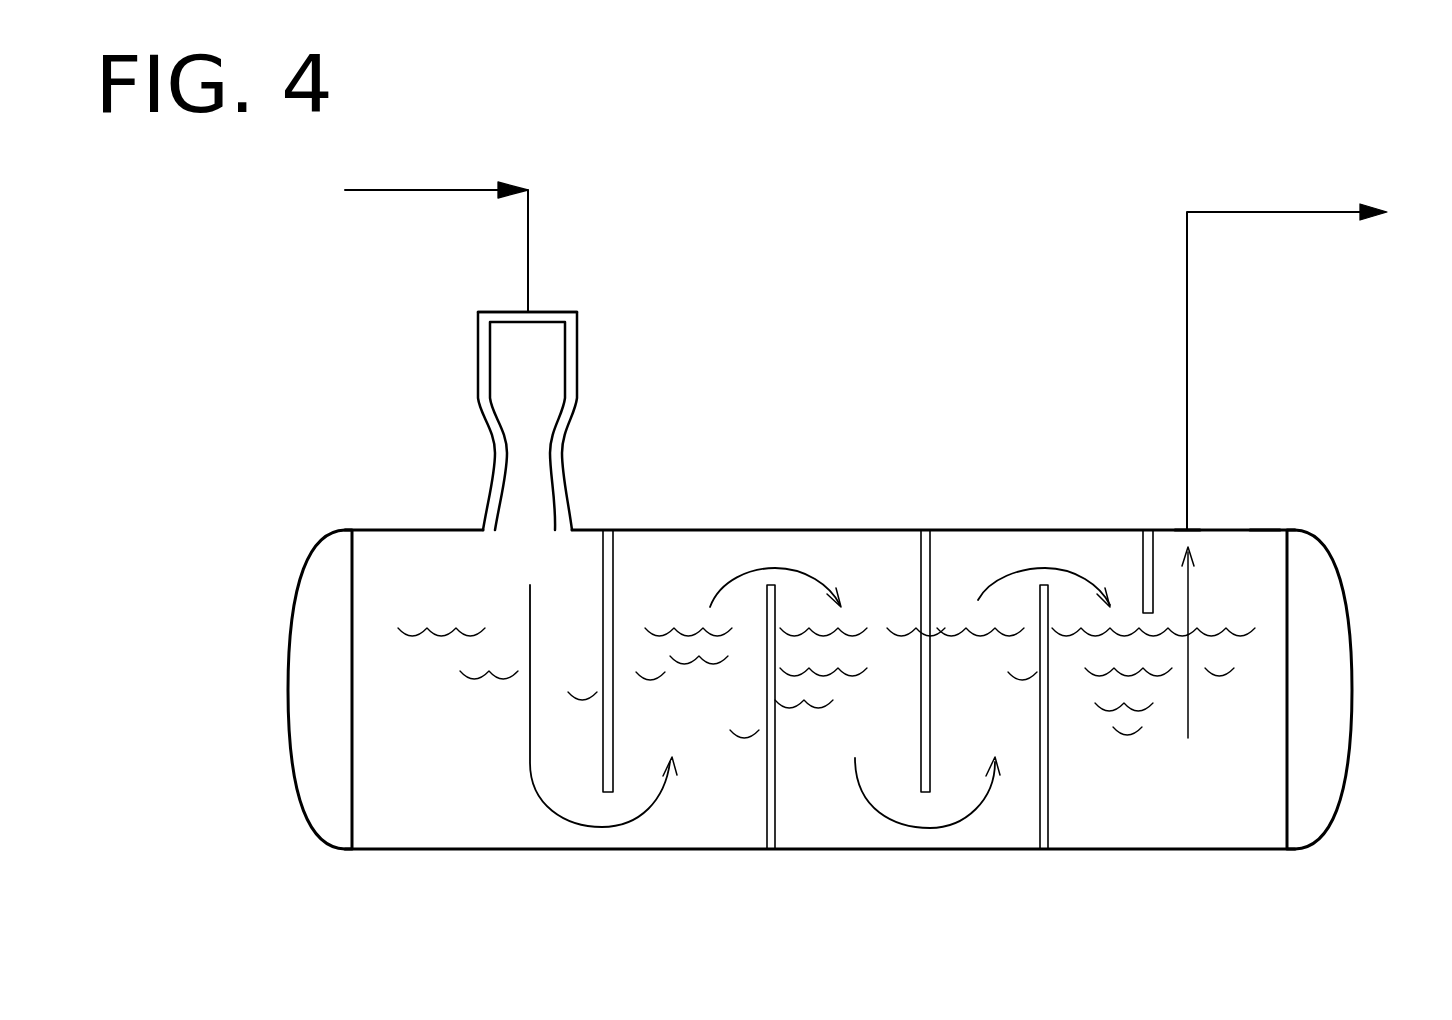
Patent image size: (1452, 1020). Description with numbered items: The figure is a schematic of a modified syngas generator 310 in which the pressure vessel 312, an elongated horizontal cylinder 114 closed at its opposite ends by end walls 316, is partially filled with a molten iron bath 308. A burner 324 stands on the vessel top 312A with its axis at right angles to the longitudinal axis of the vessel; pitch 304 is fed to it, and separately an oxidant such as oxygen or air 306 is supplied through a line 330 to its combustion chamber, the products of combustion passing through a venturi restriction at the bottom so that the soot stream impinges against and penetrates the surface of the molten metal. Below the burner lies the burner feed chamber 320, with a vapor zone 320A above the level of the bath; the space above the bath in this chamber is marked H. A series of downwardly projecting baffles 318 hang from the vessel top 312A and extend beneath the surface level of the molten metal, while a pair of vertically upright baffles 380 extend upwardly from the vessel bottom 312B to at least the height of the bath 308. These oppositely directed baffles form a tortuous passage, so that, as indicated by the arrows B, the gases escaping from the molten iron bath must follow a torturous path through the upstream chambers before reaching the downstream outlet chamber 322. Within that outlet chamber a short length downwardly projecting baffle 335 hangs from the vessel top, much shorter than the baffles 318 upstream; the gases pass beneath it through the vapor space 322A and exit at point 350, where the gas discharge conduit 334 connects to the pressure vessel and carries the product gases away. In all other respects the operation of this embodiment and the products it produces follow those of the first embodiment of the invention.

The pitch feed line 304 is at (357, 241).
The oxygen feed 306 is at (271, 250).
The feed inlet 330 is at (505, 312).
The reactor 310 is at (806, 362).
The inlet nozzle 324 is at (563, 455).
The downwardly projecting baffles 318 is at (612, 568).
The bottom baffles 380 is at (1040, 813).
The reactor vessel 312 is at (383, 852).
The vessel top 312A is at (737, 528).
The vessel bottom 312B is at (1067, 850).
The vessel end caps 316 is at (288, 690).
The first reaction zone 320 is at (473, 818).
The dip tube 320A is at (591, 690).
The downstream outlet chamber 322 is at (1135, 795).
The vapor space 322A is at (1225, 642).
The gas discharge conduit 334 is at (1190, 355).
The short length downwardly projecting baffle 335 is at (1141, 552).
The exit point 350 is at (1190, 528).
The reactor vessel wall 114 is at (1262, 528).
The molten iron bath 308 is at (895, 706).
The headspace H is at (405, 755).
The arrows B is at (737, 578).